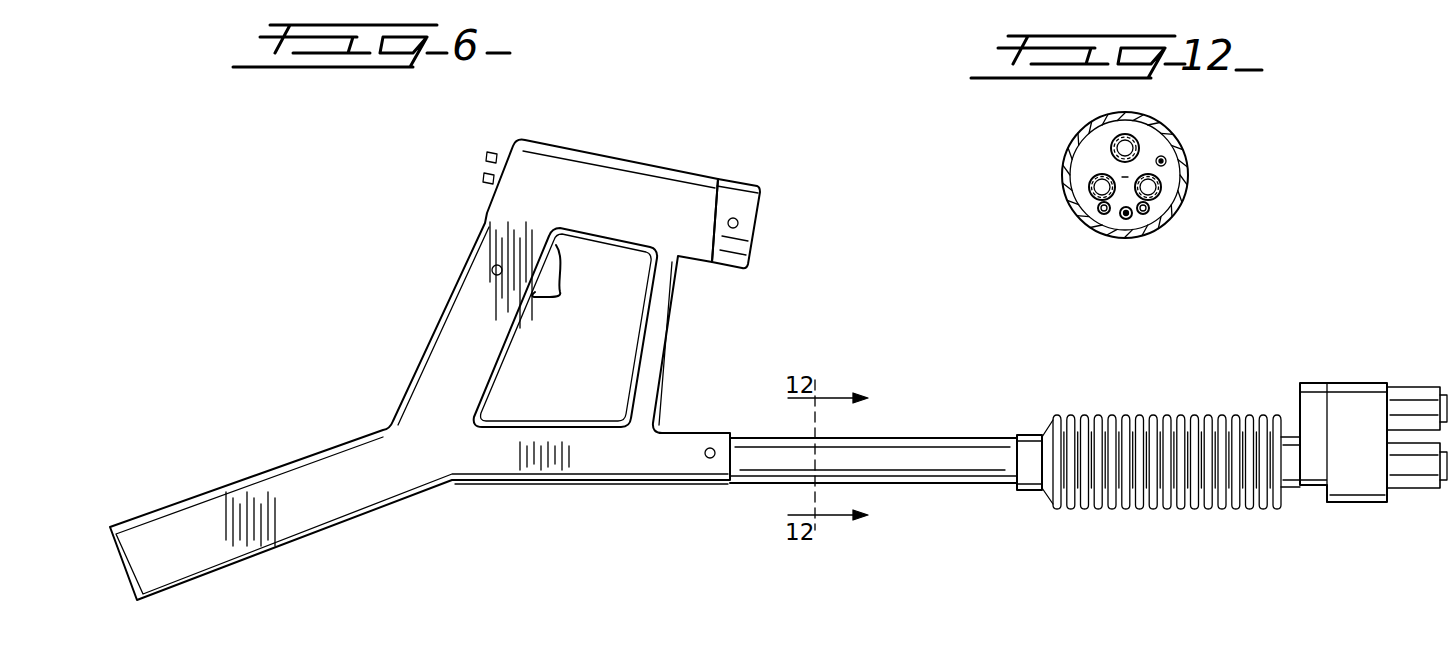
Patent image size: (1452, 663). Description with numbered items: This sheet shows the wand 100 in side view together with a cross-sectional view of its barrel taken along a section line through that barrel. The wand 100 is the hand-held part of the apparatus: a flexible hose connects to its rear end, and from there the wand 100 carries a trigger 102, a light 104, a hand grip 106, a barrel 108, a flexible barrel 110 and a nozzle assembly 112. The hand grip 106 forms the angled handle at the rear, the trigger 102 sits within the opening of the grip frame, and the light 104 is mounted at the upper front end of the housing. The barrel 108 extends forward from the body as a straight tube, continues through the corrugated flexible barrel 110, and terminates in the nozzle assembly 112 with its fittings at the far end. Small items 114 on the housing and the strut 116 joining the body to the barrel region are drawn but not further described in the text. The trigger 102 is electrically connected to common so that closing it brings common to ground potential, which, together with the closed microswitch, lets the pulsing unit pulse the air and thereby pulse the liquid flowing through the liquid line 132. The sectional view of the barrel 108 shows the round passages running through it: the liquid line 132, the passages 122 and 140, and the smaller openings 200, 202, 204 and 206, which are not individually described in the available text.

In FIG. 6, the wand 100 is at (560, 485).
In FIG. 6, the trigger 102 is at (570, 294).
In FIG. 6, the light 104 is at (757, 240).
In FIG. 6, the hand grip 106 is at (421, 358).
In FIG. 6, the barrel 108 is at (917, 437).
In FIG. 12, the barrel 108 is at (1185, 165).
In FIG. 6, the flexible barrel 110 is at (1163, 418).
In FIG. 6, the nozzle assembly 112 is at (1348, 383).
In FIG. 6, the adjustment knobs 114 is at (488, 179).
In FIG. 6, the rear strut 116 is at (672, 360).
In FIG. 12, the fluid passage 122 is at (1090, 194).
In FIG. 12, the liquid line 132 is at (1162, 187).
In FIG. 12, the air passage 140 is at (1135, 141).
In FIG. 12, the conductor passage 200 is at (1102, 215).
In FIG. 12, the conductor passage 202 is at (1130, 220).
In FIG. 12, the small passage 204 is at (1167, 160).
In FIG. 12, the conductor passage 206 is at (1150, 210).